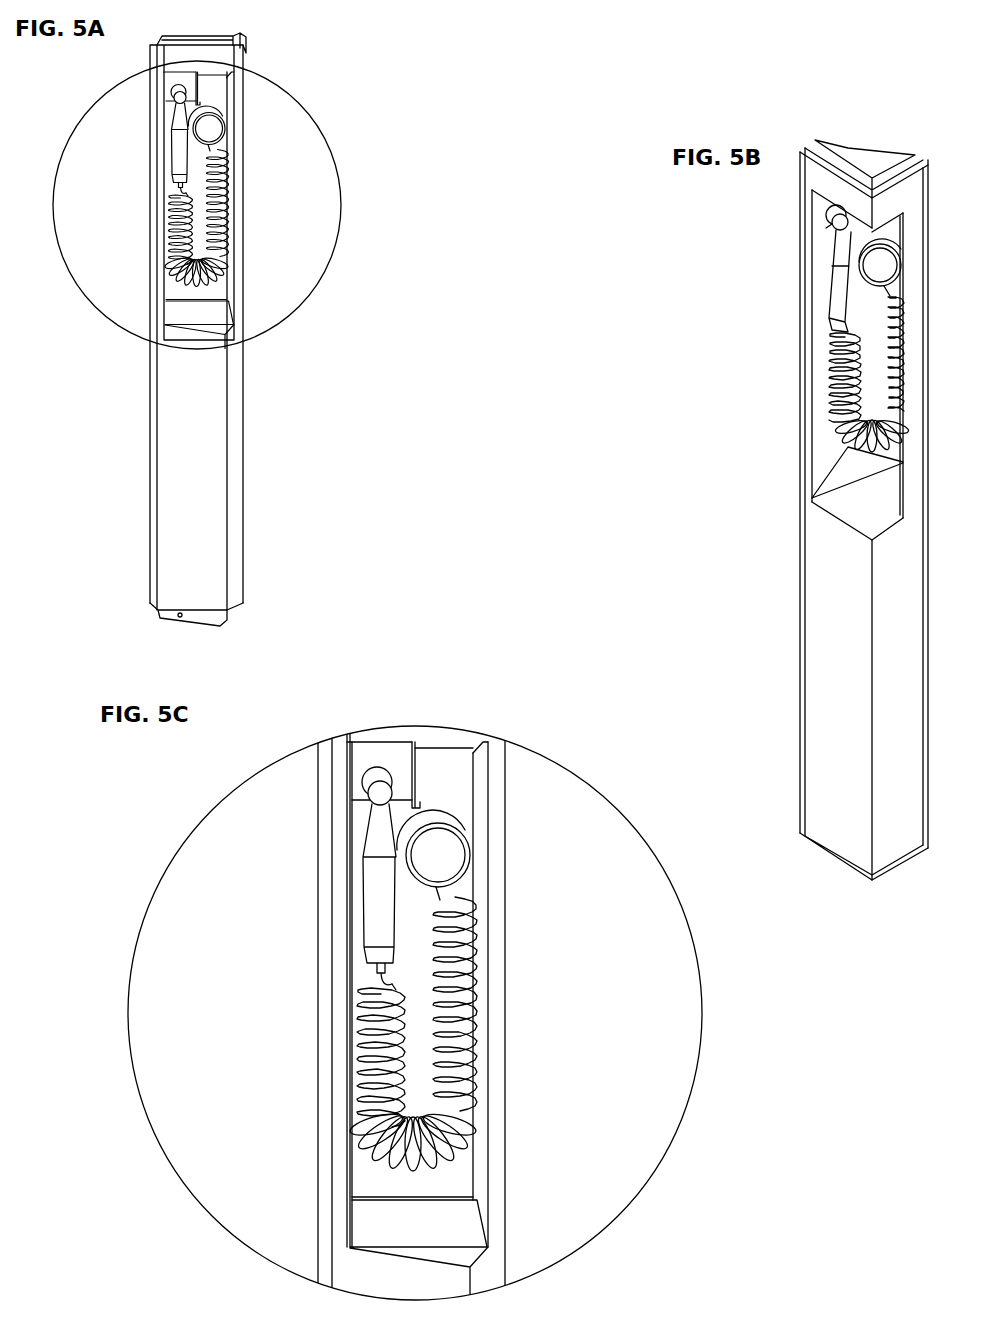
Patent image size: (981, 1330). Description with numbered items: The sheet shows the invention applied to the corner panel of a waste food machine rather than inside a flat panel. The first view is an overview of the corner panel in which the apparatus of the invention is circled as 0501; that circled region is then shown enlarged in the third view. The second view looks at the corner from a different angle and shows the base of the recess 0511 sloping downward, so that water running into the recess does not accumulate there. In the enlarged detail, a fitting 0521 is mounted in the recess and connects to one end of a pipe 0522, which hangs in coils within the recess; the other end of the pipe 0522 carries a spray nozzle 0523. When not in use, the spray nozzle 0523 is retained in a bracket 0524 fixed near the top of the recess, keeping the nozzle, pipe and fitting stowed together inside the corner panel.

In FIG. 5A, the apparatus 0501 is at (222, 205).
In FIG. 5B, the base of the recess 0511 is at (857, 478).
In FIG. 5C, the fitting 0521 is at (450, 850).
In FIG. 5C, the pipe 0522 is at (468, 1117).
In FIG. 5C, the spray nozzle 0523 is at (376, 882).
In FIG. 5C, the bracket 0524 is at (420, 770).